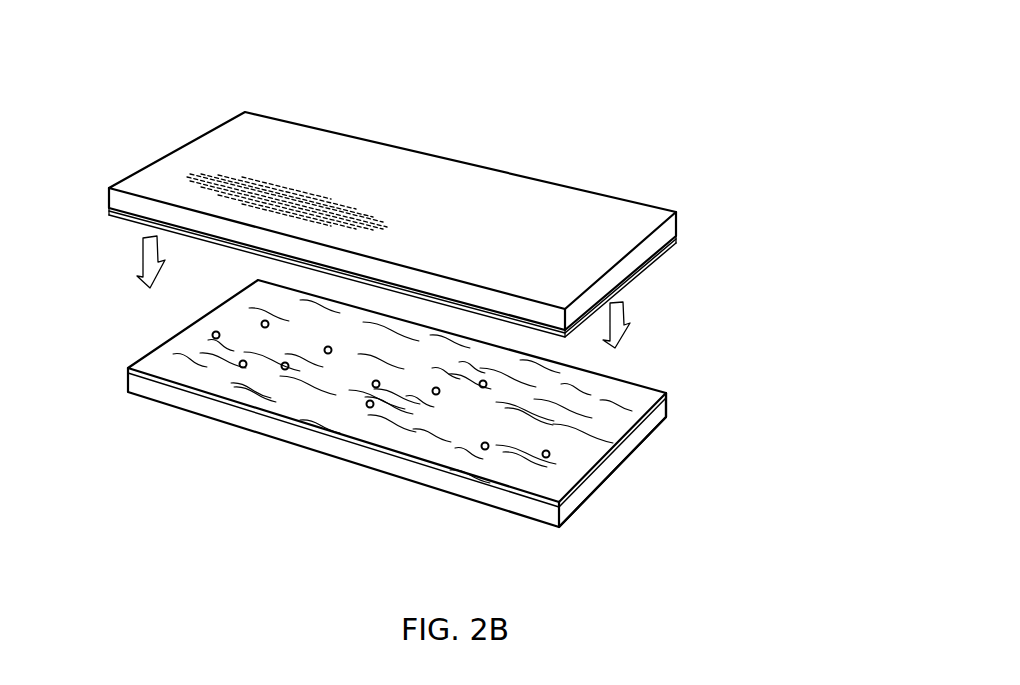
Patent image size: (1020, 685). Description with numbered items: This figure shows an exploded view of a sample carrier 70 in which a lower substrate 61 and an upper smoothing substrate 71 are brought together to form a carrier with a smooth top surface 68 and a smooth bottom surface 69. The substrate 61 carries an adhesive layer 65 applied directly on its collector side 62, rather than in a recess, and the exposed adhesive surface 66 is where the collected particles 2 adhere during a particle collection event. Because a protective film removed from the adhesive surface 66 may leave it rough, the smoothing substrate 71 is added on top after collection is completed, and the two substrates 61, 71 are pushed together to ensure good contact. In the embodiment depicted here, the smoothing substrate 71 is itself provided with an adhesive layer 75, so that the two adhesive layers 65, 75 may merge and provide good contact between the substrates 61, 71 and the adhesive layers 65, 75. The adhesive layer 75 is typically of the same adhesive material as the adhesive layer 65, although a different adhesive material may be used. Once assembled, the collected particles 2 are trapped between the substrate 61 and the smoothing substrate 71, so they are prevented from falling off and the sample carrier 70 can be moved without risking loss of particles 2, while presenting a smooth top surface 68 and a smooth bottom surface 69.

The sample carrier 70 is at (630, 115).
The smoothing substrate 71 is at (400, 203).
The smooth top surface 68 is at (423, 198).
The adhesive layer 75 is at (652, 262).
The collector side 62 is at (209, 328).
The adhesive surface 66 is at (623, 403).
The adhesive layer 65 is at (655, 412).
The substrate 61 is at (448, 416).
The smooth bottom surface 69 is at (517, 514).
The collected particles 2 is at (433, 395).